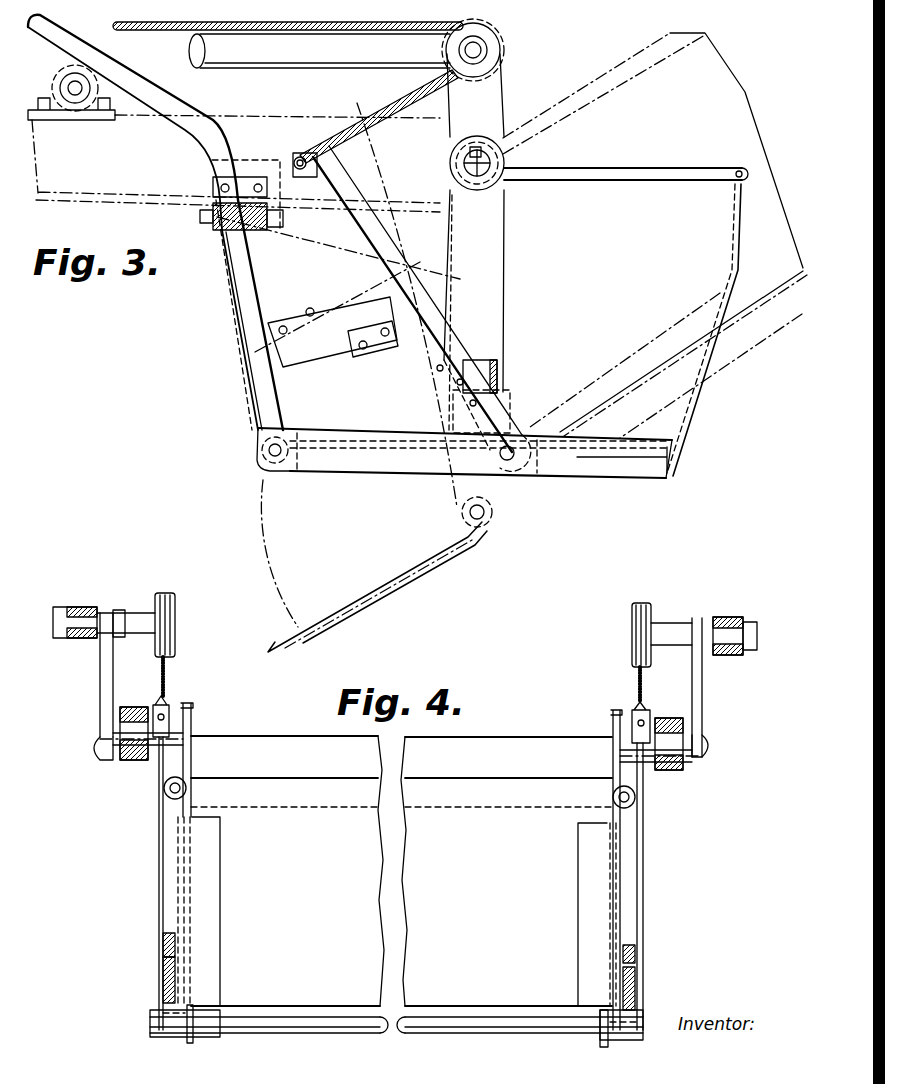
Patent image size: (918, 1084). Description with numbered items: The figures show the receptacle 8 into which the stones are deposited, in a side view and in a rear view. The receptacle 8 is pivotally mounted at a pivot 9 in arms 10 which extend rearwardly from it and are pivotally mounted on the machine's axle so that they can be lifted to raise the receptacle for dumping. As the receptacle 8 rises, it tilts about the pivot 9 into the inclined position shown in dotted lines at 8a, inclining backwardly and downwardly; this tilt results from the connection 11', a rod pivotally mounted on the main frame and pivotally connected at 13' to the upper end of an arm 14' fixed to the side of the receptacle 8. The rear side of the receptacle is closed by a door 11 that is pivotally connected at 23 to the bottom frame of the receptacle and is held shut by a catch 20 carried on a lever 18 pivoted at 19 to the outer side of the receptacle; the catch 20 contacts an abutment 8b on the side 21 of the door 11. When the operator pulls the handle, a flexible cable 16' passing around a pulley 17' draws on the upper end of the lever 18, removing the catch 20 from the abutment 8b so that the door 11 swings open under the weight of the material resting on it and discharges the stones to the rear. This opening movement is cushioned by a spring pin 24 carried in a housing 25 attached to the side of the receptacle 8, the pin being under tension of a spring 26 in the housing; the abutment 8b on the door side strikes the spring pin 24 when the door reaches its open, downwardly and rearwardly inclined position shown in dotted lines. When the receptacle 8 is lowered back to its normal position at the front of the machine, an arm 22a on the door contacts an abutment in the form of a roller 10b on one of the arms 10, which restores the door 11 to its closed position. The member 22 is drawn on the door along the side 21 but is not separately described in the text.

In FIG. 3, the receptacle 8 is at (703, 257).
In FIG. 3, the inclined position of receptacle 8a is at (740, 127).
In FIG. 3, the abutment 8b is at (377, 360).
In FIG. 4, the abutment 8b is at (167, 978).
In FIG. 3, the pivot 9 is at (481, 157).
In FIG. 4, the pivot 9 is at (99, 733).
In FIG. 3, the arms 10 is at (160, 180).
In FIG. 4, the arms 10 is at (127, 762).
In FIG. 3, the roller 10b is at (84, 66).
In FIG. 3, the door 11 is at (431, 377).
In FIG. 4, the door 11 is at (396, 868).
In FIG. 3, the connection 11' is at (319, 67).
In FIG. 4, the connection 11' is at (408, 611).
In FIG. 3, the pivotal connection 13' is at (509, 47).
In FIG. 3, the arm 14' is at (501, 95).
In FIG. 4, the arm 14' is at (398, 686).
In FIG. 3, the flexible cable 16' is at (288, 92).
In FIG. 4, the flexible cable 16' is at (401, 679).
In FIG. 3, the pulley 17' is at (522, 50).
In FIG. 4, the pulley 17' is at (403, 620).
In FIG. 3, the lever 18 is at (400, 195).
In FIG. 4, the lever 18 is at (159, 868).
In FIG. 3, the pivot 19 is at (520, 460).
In FIG. 4, the pivot 19 is at (644, 870).
In FIG. 3, the catch 20 is at (498, 373).
In FIG. 4, the catch 20 is at (163, 950).
In FIG. 3, the side 21 is at (228, 303).
In FIG. 4, the side 21 is at (178, 907).
In FIG. 3, the handle bar 22 is at (257, 360).
In FIG. 3, the arm 22a is at (163, 99).
In FIG. 3, the pivotal connection 23 is at (268, 455).
In FIG. 4, the pivotal connection 23 is at (197, 1023).
In FIG. 3, the spring pin 24 is at (277, 222).
In FIG. 4, the spring pin 24 is at (636, 806).
In FIG. 3, the housing 25 is at (245, 205).
In FIG. 3, the spring 26 is at (220, 230).